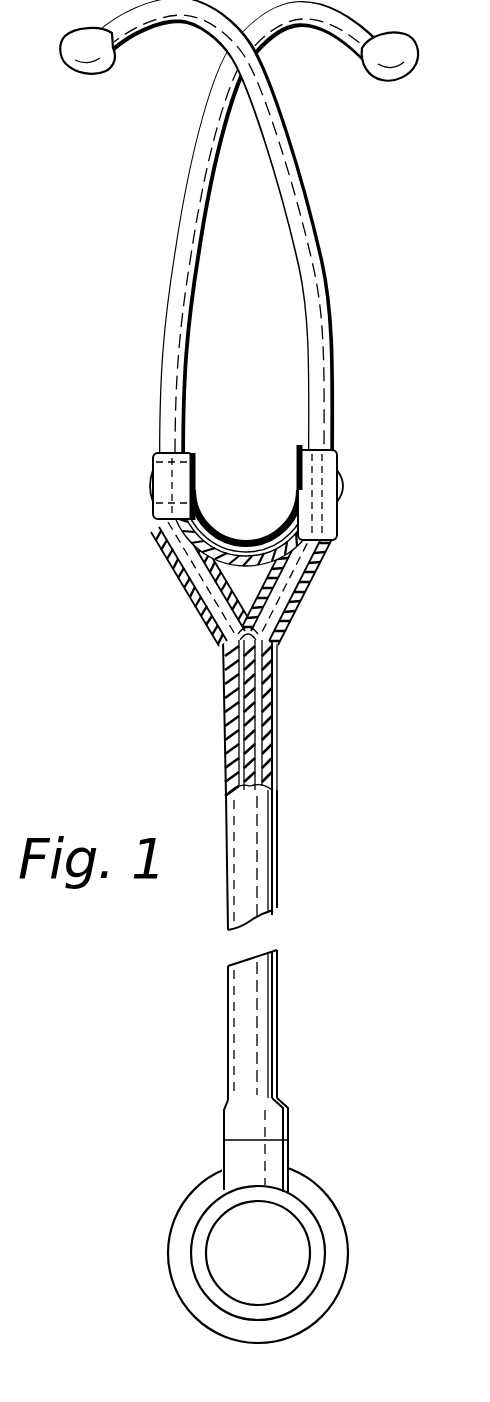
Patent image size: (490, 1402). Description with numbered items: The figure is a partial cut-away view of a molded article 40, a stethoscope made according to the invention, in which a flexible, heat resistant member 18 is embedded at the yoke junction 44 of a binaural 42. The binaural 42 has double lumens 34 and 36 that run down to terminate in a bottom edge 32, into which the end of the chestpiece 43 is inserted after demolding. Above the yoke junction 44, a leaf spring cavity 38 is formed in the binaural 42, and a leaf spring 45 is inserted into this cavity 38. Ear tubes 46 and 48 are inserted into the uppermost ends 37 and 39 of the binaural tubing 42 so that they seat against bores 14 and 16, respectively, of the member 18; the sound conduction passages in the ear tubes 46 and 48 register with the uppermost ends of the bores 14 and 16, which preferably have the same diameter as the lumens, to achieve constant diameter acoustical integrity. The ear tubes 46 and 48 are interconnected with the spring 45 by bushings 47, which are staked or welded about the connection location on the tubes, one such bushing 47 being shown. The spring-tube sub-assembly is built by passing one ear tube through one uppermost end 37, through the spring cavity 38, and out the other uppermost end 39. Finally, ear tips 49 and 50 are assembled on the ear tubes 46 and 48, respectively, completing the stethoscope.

The bore 14 is at (193, 608).
The bore 16 is at (307, 607).
The flexible, heat resistant member 18 is at (173, 572).
The bottom edge 32 is at (245, 1141).
The lumen 34 is at (250, 748).
The lumen 36 is at (253, 735).
The uppermost end 37 is at (167, 440).
The leaf spring cavity 38 is at (232, 545).
The uppermost end 39 is at (337, 440).
The molded article 40 is at (285, 1010).
The binaural 42 is at (277, 908).
The chestpiece 43 is at (347, 1222).
The yoke junction 44 is at (208, 620).
The leaf spring 45 is at (316, 556).
The ear tube 46 is at (168, 332).
The bushing 47 is at (340, 482).
The ear tube 48 is at (315, 340).
The ear tip 49 is at (88, 77).
The ear tip 50 is at (390, 82).